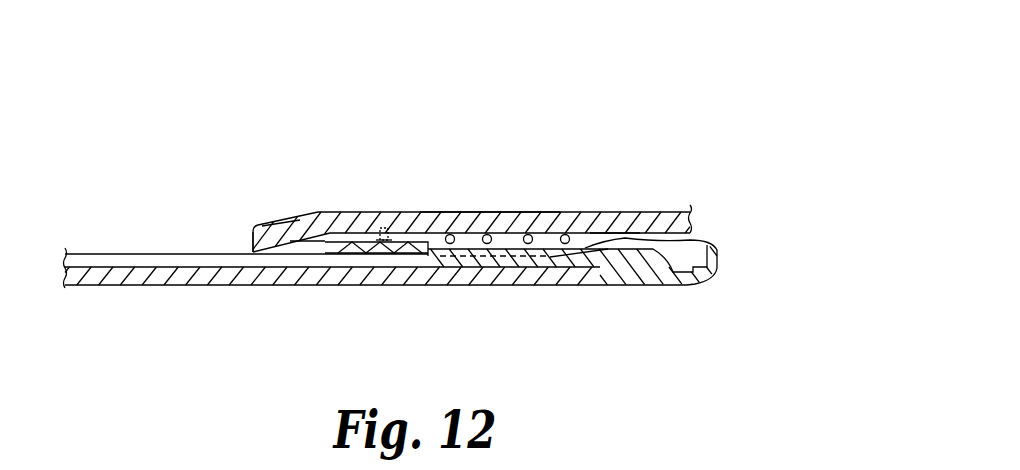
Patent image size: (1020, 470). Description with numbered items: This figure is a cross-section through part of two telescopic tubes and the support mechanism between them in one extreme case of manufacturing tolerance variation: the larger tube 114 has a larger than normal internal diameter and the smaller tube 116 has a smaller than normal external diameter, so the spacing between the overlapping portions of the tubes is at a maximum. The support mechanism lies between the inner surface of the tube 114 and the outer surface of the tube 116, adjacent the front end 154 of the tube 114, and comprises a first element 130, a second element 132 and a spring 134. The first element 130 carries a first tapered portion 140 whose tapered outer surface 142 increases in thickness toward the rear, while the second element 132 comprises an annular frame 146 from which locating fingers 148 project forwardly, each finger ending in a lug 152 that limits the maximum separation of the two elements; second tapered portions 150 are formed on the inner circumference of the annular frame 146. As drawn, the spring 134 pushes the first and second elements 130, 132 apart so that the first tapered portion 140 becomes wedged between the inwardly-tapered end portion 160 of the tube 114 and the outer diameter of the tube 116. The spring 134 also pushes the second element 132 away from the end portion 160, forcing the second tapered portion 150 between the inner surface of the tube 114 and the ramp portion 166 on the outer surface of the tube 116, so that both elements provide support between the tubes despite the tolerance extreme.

The tube 114 is at (543, 220).
The tube 116 is at (177, 262).
The first element 130 is at (332, 250).
The second element 132 is at (602, 237).
The spring 134 is at (453, 235).
The first tapered portion 140 is at (283, 250).
The tapered outer surface 142 is at (273, 245).
The annular frame 146 is at (700, 238).
The locating finger 148 is at (443, 250).
The second tapered portion 150 is at (612, 253).
The lug 152 is at (383, 238).
The front end 154 is at (374, 242).
The inwardly-tapered end portion 160 is at (282, 233).
The ramp portion 166 is at (567, 258).